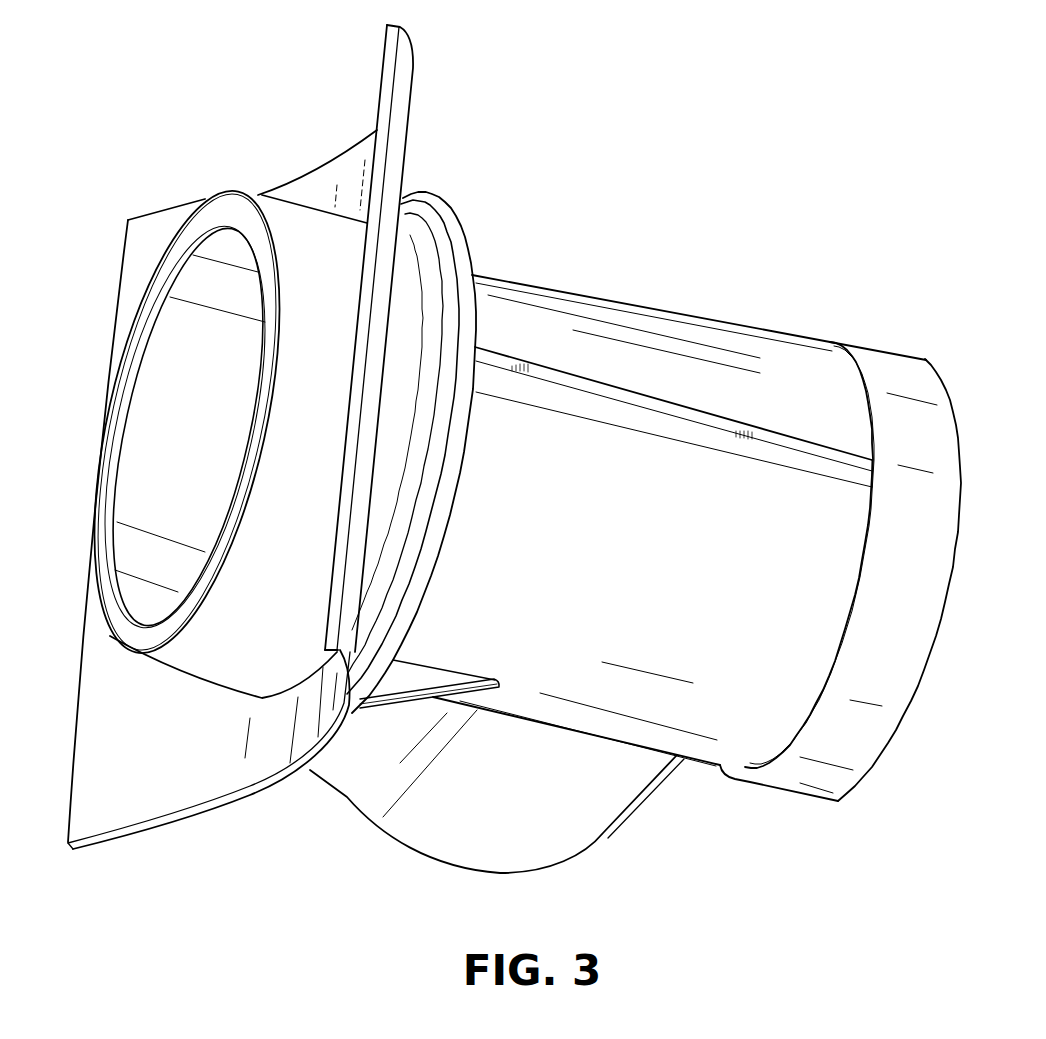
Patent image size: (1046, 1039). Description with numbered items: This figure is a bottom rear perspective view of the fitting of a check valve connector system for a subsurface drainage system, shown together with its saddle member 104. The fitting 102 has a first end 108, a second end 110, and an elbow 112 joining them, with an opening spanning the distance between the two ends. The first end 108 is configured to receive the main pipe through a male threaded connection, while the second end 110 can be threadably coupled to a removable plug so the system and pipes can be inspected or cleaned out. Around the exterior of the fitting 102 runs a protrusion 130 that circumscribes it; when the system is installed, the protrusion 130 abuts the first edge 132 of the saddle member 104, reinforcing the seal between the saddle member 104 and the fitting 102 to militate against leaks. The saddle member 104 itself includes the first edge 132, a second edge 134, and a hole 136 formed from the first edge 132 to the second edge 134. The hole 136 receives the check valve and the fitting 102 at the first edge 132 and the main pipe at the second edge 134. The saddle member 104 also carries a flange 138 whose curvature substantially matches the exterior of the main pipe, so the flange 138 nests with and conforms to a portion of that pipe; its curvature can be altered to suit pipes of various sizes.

The fitting 102 is at (787, 372).
The saddle member 104 is at (325, 183).
The first end 108 is at (463, 231).
The second end 110 is at (900, 382).
The elbow 112 is at (603, 800).
The protrusion 130 is at (479, 266).
The first edge 132 is at (417, 223).
The second edge 134 is at (207, 667).
The hole 136 is at (200, 448).
The flange 138 is at (167, 787).